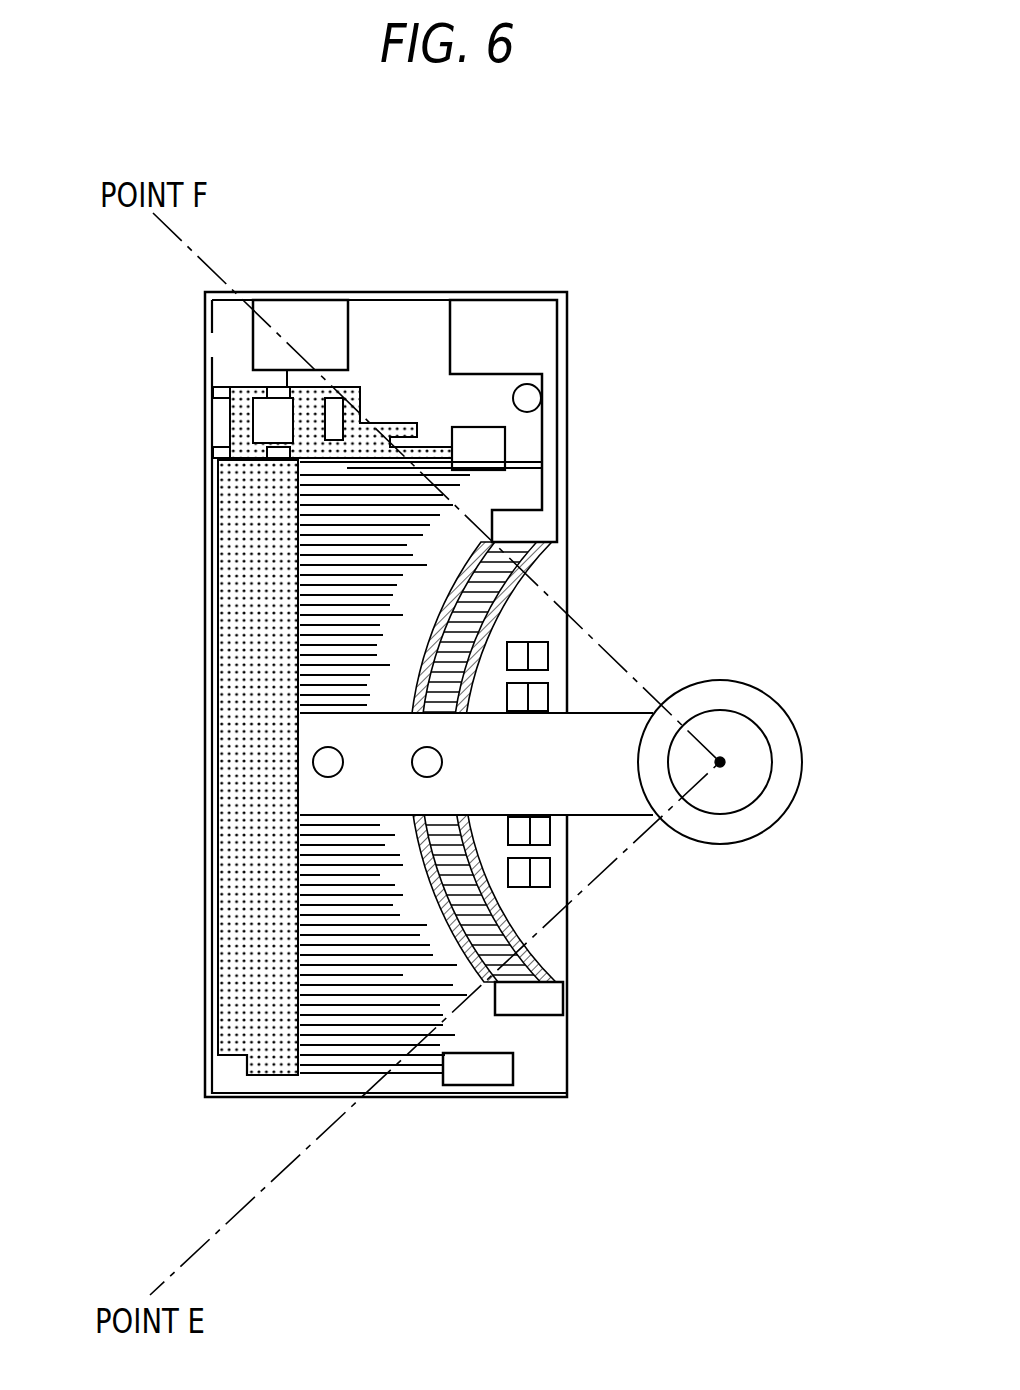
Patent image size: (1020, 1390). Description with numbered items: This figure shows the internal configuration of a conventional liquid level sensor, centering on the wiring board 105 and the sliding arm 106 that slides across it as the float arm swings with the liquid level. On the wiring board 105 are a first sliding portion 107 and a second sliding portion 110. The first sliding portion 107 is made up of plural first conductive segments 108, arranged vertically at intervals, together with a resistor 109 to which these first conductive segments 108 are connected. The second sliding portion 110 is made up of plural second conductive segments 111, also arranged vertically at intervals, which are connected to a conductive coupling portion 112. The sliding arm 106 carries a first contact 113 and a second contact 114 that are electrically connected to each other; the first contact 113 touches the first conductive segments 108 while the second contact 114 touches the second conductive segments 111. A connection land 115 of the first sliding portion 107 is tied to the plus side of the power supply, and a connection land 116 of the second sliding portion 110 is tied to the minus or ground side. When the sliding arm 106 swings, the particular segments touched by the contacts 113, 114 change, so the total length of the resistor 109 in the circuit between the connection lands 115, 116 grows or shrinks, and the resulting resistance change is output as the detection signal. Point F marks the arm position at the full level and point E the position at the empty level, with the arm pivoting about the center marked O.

The wiring board 105 is at (233, 1097).
The sliding arm 106 is at (593, 730).
The first sliding portion 107 is at (404, 1097).
The first conductive segments 108 is at (353, 1020).
The resistor 109 is at (243, 888).
The second sliding portion 110 is at (588, 997).
The second conductive segments 111 is at (493, 617).
The conductive coupling portion 112 is at (437, 1008).
The first contact 113 is at (322, 760).
The second contact 114 is at (420, 757).
The connection land 115 is at (298, 320).
The connection land 116 is at (497, 327).
The pivot center O is at (753, 720).